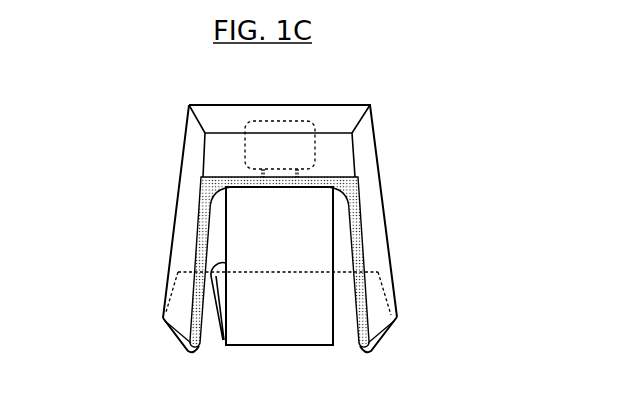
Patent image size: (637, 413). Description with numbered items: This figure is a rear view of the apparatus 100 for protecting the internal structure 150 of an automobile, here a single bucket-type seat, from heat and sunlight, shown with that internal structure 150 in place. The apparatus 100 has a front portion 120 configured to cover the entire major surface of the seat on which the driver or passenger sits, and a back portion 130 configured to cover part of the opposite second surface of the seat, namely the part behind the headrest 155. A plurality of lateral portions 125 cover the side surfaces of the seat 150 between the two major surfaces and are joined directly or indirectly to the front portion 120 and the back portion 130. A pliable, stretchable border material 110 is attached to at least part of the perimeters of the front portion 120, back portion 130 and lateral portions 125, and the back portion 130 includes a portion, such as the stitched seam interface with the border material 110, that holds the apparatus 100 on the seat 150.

The apparatus 100 is at (153, 105).
The border material 110 is at (180, 290).
The front portion 120 is at (222, 246).
The lateral portions 125 is at (367, 217).
The back portion 130 is at (343, 157).
The internal structure 150 is at (280, 333).
The headrest 155 is at (245, 157).